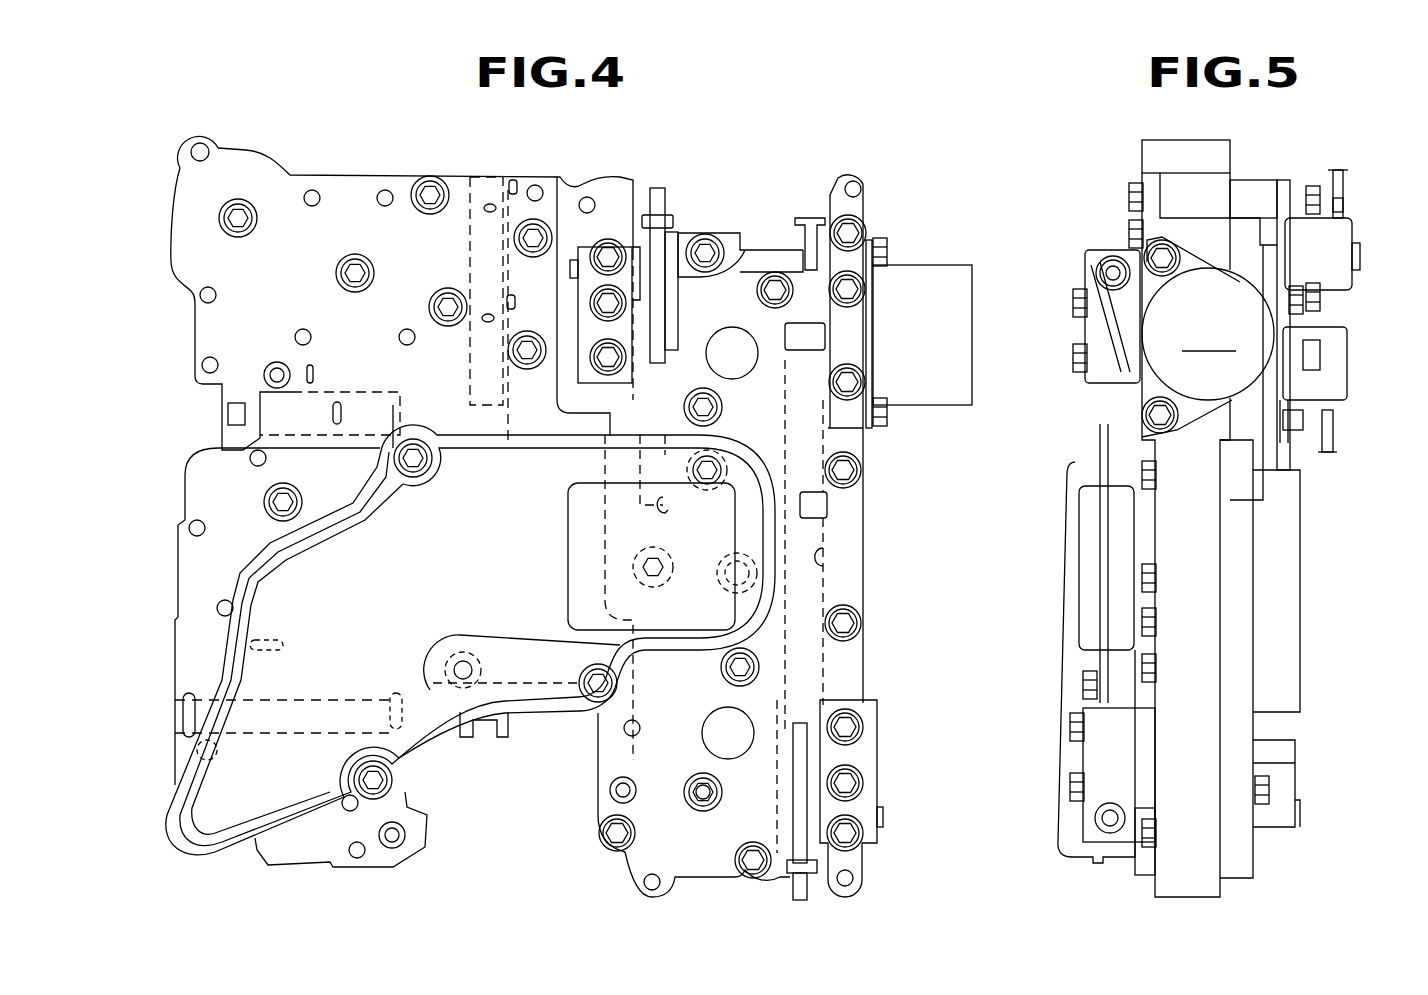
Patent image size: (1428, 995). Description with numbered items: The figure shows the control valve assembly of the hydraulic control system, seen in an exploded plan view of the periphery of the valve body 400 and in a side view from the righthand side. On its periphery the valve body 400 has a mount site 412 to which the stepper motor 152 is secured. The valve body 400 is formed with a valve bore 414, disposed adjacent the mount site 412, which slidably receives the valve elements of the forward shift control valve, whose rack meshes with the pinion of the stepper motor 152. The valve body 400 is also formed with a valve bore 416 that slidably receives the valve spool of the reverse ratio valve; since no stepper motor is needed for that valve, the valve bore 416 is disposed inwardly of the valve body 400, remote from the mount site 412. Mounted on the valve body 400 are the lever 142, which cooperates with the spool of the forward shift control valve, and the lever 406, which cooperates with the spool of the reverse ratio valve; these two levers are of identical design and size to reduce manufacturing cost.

In FIG. 4, the valve body 400 is at (863, 527).
In FIG. 5, the valve body 400 is at (1305, 553).
In FIG. 4, the lever 406 is at (653, 323).
In FIG. 5, the lever 406 is at (1085, 323).
In FIG. 4, the mount site 412 is at (873, 378).
In FIG. 5, the mount site 412 is at (1193, 243).
In FIG. 4, the stepper motor 152 is at (972, 360).
In FIG. 5, the stepper motor 152 is at (1208, 334).
In FIG. 4, the valve bore 414 is at (822, 558).
In FIG. 4, the valve bore 416 is at (663, 520).
In FIG. 4, the lever 142 is at (803, 727).